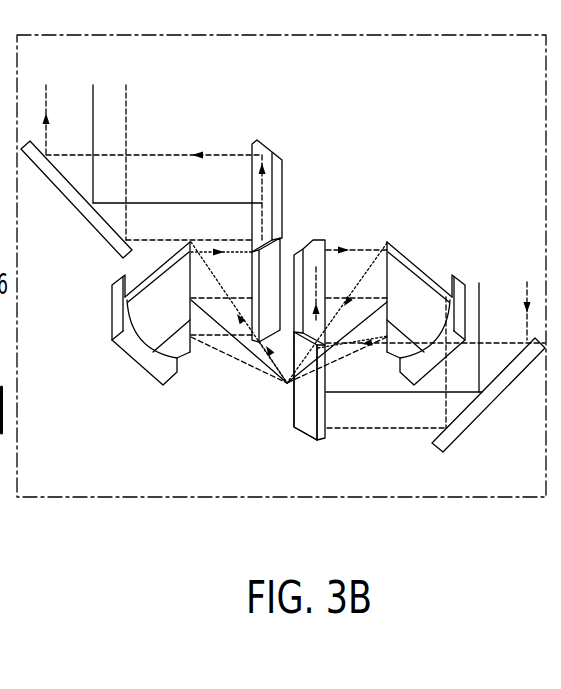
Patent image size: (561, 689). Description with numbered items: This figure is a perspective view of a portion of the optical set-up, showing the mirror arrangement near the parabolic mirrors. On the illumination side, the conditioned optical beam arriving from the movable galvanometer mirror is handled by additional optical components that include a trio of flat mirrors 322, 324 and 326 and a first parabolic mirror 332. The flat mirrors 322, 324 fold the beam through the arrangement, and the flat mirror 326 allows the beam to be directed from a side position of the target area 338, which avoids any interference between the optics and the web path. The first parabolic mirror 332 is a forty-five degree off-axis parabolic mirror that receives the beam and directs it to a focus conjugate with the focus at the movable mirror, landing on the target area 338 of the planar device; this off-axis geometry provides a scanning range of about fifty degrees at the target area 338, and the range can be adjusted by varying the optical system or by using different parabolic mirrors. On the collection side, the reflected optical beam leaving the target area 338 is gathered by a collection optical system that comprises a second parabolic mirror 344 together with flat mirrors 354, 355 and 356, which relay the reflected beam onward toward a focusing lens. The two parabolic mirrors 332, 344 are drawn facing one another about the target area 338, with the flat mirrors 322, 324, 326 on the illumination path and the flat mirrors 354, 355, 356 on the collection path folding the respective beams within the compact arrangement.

The flat mirror 322 is at (497, 397).
The flat mirror 324 is at (327, 438).
The flat mirror 326 is at (315, 232).
The first parabolic mirror 332 is at (420, 266).
The target area 338 is at (288, 393).
The second parabolic mirror 344 is at (137, 365).
The flat mirror 354 is at (284, 380).
The flat mirror 355 is at (240, 130).
The flat mirror 356 is at (58, 224).